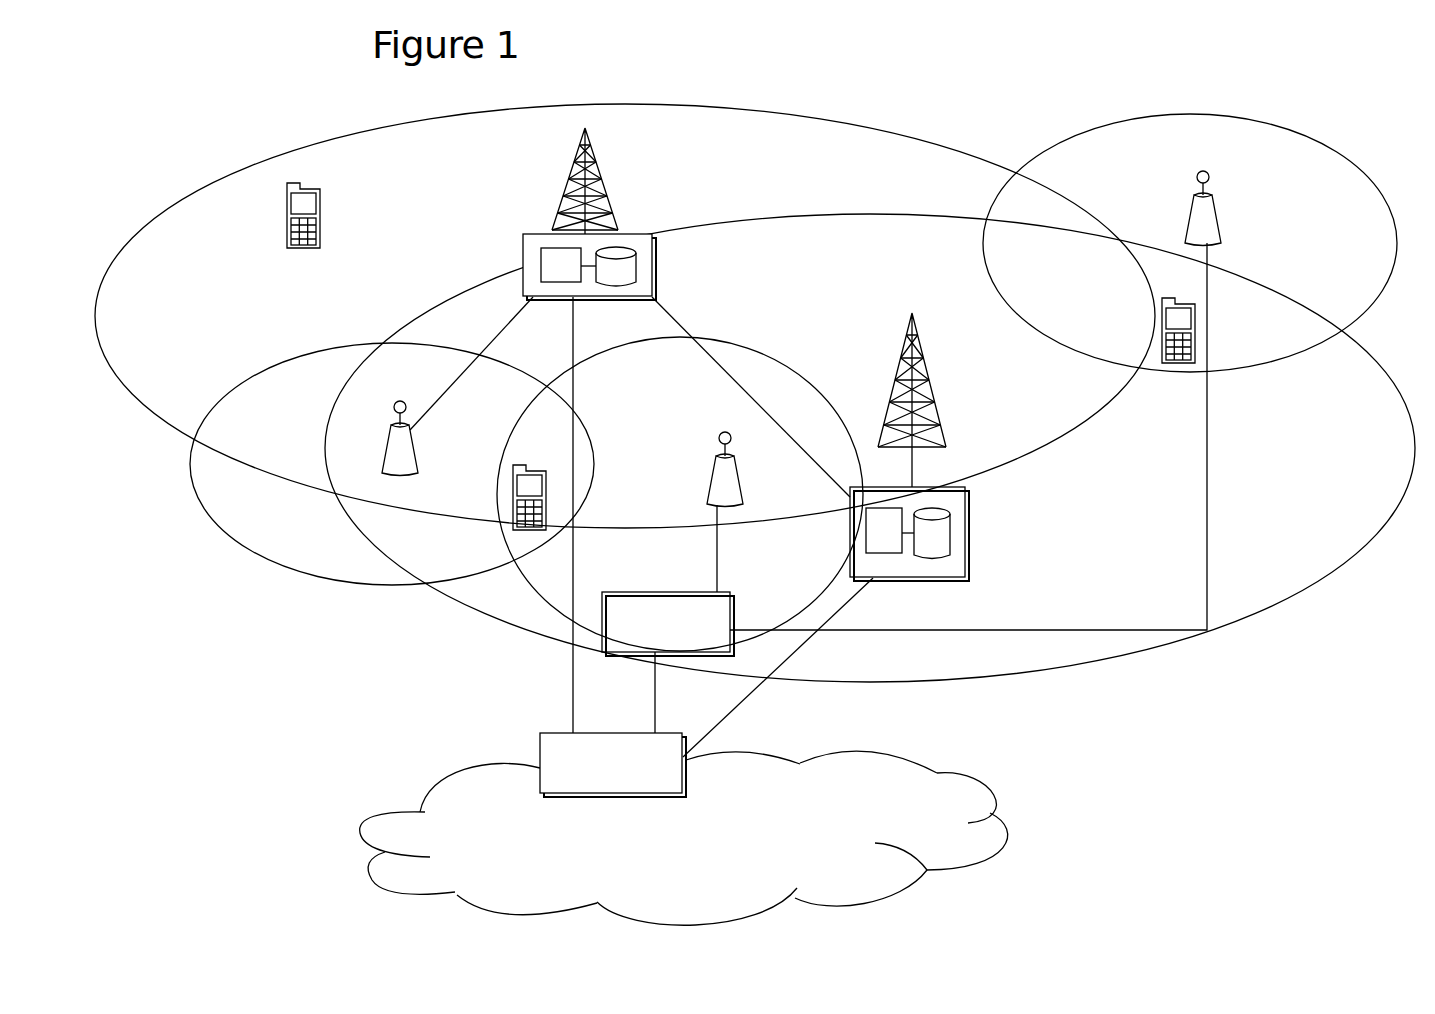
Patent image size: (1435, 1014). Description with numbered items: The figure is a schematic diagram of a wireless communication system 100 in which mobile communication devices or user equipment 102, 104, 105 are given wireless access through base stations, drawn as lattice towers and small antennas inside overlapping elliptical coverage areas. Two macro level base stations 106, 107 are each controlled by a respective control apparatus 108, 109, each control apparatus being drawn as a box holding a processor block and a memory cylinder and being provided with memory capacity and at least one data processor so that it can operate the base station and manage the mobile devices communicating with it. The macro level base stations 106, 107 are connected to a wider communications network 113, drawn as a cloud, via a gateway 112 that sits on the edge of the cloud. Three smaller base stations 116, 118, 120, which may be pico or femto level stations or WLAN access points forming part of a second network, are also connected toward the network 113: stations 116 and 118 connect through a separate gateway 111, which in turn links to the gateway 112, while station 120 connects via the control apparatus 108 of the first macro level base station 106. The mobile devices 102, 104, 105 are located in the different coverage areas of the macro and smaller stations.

The wireless communication system 100 is at (286, 116).
The mobile communication device 102 is at (287, 226).
The mobile communication device 104 is at (513, 503).
The mobile communication device 105 is at (1178, 364).
The macro level base station 106 is at (570, 172).
The macro level base station 107 is at (932, 374).
The control apparatus 108 is at (523, 252).
The control apparatus 109 is at (967, 548).
The gateway 111 is at (663, 605).
The gateway 112 is at (538, 732).
The wider communications network 113 is at (452, 805).
The smaller base station 116 is at (1190, 203).
The smaller base station 118 is at (718, 483).
The smaller base station 120 is at (387, 449).